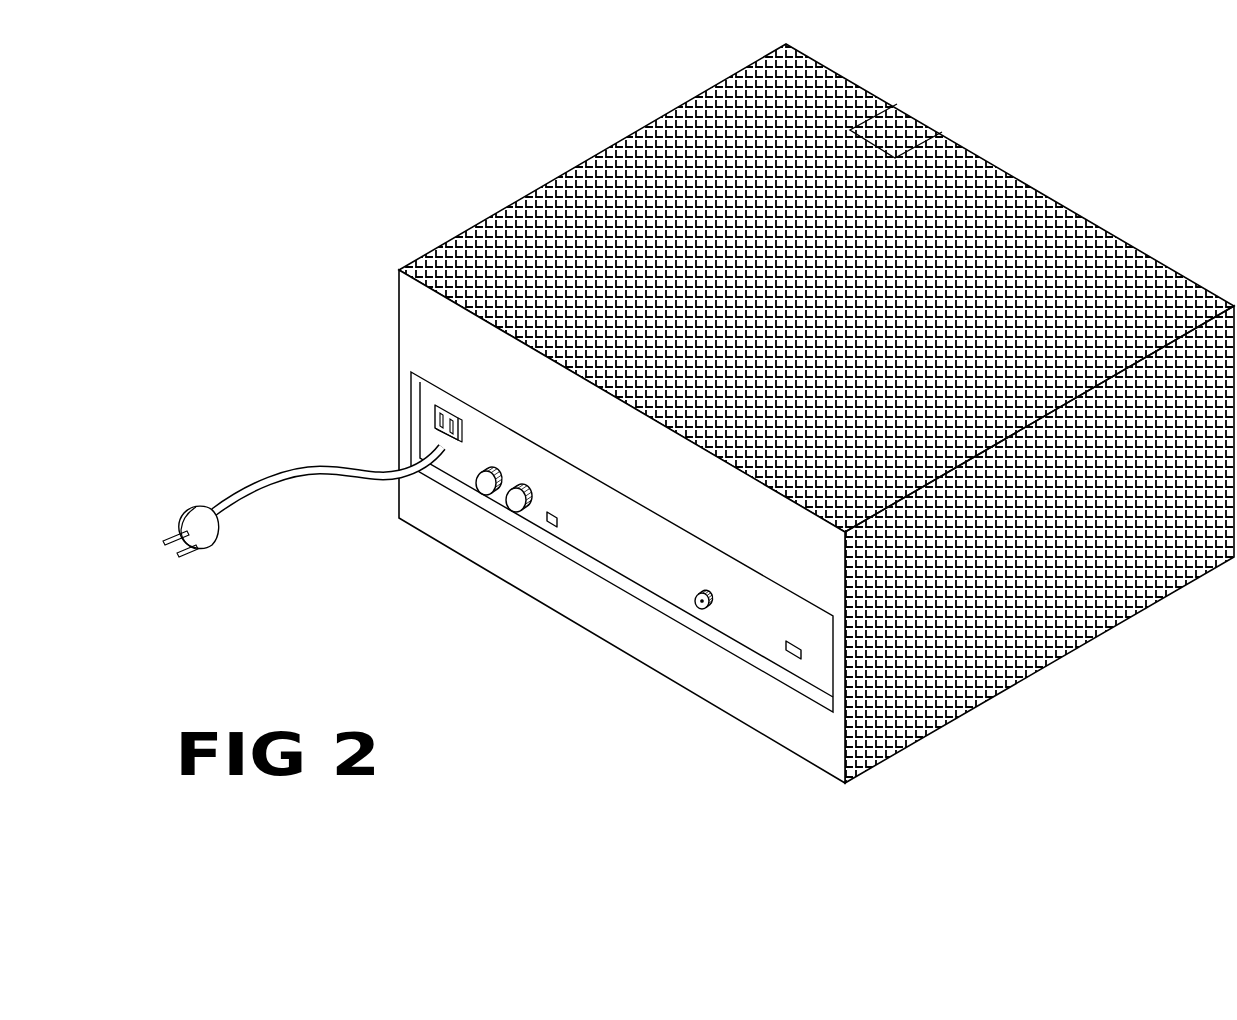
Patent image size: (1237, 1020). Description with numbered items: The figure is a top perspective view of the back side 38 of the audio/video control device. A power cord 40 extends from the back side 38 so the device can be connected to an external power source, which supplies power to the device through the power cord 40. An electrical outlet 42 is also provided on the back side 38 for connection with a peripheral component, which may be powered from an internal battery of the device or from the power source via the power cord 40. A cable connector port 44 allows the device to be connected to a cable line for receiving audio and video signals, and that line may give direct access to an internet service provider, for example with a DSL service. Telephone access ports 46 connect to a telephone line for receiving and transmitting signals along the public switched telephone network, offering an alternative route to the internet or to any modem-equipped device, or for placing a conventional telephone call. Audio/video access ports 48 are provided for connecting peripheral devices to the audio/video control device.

The back side 38 is at (411, 350).
The power cord 40 is at (289, 483).
The electrical outlet 42 is at (434, 412).
The cable connector port 44 is at (695, 600).
The telephone access ports 46 is at (548, 526).
The audio/video access ports 48 is at (518, 512).